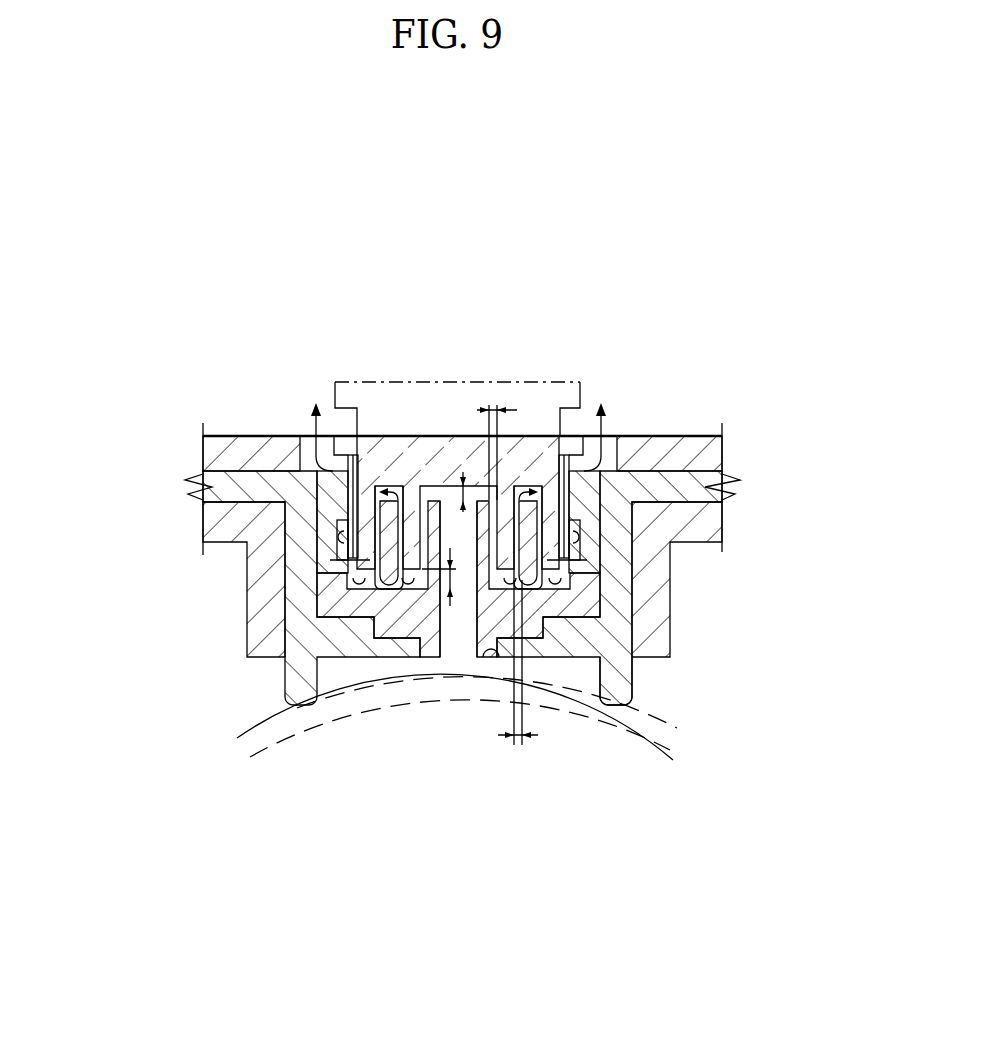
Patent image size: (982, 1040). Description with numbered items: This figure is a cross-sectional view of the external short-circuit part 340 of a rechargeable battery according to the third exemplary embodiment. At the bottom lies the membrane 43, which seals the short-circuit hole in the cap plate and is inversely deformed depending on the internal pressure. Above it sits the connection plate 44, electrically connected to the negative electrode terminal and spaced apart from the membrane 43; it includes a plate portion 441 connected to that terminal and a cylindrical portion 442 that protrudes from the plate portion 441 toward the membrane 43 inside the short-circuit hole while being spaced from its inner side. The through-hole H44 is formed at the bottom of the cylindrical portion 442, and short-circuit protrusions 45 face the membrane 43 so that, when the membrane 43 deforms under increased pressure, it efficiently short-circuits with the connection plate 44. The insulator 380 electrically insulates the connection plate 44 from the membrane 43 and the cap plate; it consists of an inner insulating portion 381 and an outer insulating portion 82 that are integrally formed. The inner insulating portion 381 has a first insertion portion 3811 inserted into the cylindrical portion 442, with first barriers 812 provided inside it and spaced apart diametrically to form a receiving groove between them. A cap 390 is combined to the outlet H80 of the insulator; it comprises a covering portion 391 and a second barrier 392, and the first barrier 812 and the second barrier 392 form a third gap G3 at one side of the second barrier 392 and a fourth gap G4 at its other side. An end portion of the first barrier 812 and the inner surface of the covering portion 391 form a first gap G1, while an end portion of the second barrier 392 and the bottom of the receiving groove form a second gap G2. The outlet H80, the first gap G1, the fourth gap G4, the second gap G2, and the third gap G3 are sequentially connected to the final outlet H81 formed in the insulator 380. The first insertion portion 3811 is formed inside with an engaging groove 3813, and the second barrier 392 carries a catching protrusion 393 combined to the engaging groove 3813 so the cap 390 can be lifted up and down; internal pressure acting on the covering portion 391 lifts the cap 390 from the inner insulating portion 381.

The external short-circuit part 340 is at (455, 197).
The cap 390 is at (352, 448).
The covering portion 391 is at (410, 516).
The second barrier 392 is at (367, 510).
The catching protrusion 393 is at (338, 560).
The connection plate 44 is at (382, 570).
The plate portion 441 is at (186, 486).
The cylindrical portion 442 is at (303, 530).
The insulator 380 is at (478, 580).
The inner insulating portion 381 is at (606, 522).
The first insertion portion 3811 is at (332, 590).
The engaging groove 3813 is at (345, 547).
The outer insulating portion 82 is at (678, 578).
The short-circuit protrusion 45 is at (621, 697).
The membrane 43 is at (658, 728).
The first barrier 812 is at (527, 572).
The first gap G1 is at (463, 470).
The second gap G2 is at (452, 603).
The third gap G3 is at (518, 753).
The fourth gap G4 is at (495, 410).
The through-hole H44 is at (484, 658).
The outlet H80 is at (472, 660).
The final outlet H81 is at (608, 448).